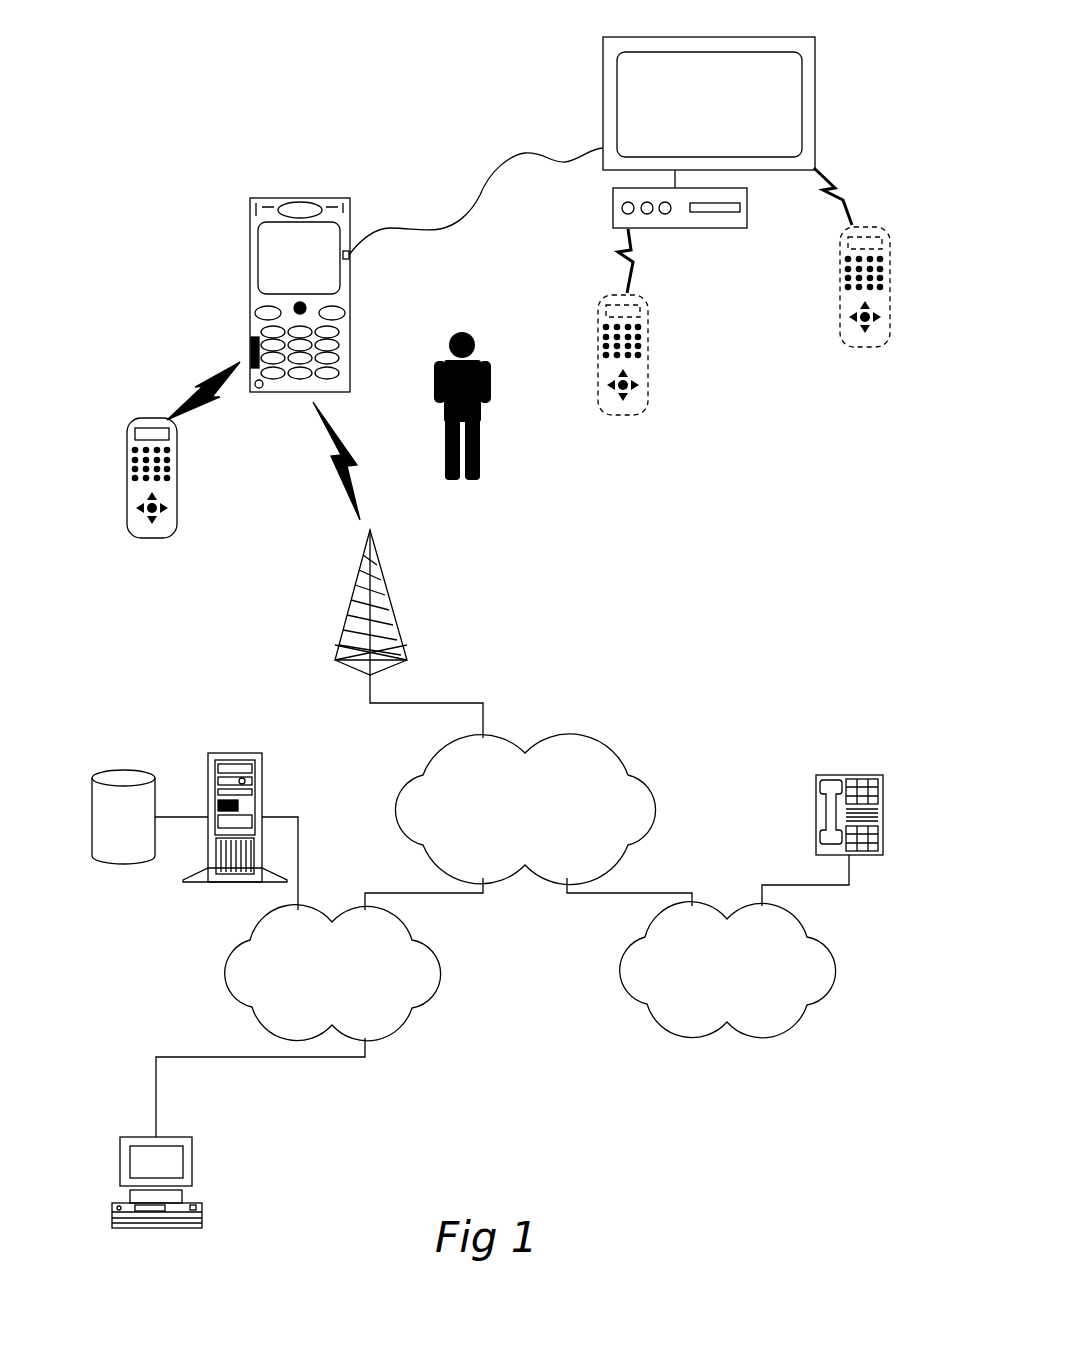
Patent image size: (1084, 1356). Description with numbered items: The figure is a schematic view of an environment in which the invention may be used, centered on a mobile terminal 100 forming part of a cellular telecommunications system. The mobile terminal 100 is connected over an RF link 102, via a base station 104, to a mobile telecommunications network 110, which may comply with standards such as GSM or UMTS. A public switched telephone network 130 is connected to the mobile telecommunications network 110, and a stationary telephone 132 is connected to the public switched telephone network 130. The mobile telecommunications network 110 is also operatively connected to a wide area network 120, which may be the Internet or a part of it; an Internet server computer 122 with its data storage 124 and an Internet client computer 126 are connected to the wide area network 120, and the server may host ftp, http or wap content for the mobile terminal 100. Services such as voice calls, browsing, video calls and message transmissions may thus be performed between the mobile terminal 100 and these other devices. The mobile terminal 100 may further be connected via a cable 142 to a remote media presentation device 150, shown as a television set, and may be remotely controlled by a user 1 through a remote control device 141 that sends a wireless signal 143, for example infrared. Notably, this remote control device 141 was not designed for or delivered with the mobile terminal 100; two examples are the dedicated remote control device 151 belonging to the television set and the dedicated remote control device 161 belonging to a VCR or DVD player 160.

The user 1 is at (485, 364).
The mobile terminal 100 is at (250, 225).
The RF link 102 is at (348, 492).
The base station 104 is at (373, 603).
The mobile telecommunications network 110 is at (511, 781).
The wide area network 120 is at (316, 958).
The Internet server computer 122 is at (210, 792).
The data storage 124 is at (118, 778).
The Internet client computer 126 is at (172, 1145).
The public switched telephone network 130 is at (710, 965).
The stationary telephone 132 is at (816, 795).
The remote control device 141 is at (177, 448).
The cable 142 is at (455, 225).
The wireless signal 143 is at (196, 380).
The remote media presentation device 150 is at (603, 88).
The dedicated remote control device for the television set 151 is at (845, 300).
The VCR or DVD player 160 is at (613, 197).
The dedicated remote control device for the VCR or DVD player 161 is at (598, 370).